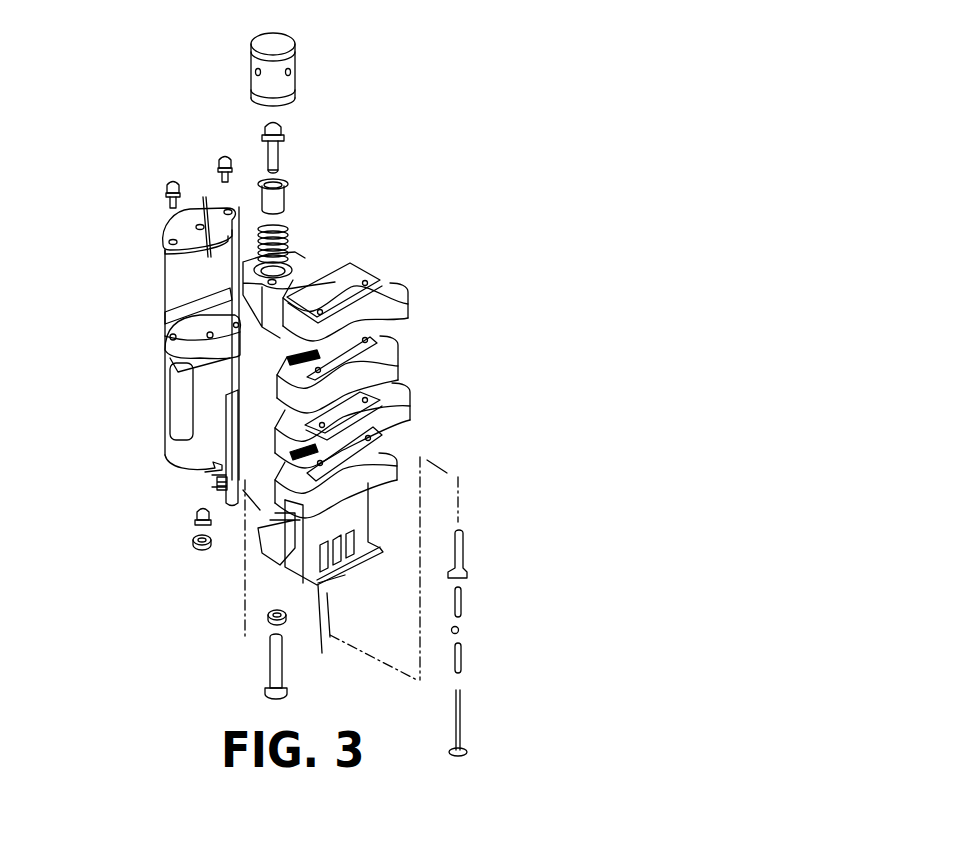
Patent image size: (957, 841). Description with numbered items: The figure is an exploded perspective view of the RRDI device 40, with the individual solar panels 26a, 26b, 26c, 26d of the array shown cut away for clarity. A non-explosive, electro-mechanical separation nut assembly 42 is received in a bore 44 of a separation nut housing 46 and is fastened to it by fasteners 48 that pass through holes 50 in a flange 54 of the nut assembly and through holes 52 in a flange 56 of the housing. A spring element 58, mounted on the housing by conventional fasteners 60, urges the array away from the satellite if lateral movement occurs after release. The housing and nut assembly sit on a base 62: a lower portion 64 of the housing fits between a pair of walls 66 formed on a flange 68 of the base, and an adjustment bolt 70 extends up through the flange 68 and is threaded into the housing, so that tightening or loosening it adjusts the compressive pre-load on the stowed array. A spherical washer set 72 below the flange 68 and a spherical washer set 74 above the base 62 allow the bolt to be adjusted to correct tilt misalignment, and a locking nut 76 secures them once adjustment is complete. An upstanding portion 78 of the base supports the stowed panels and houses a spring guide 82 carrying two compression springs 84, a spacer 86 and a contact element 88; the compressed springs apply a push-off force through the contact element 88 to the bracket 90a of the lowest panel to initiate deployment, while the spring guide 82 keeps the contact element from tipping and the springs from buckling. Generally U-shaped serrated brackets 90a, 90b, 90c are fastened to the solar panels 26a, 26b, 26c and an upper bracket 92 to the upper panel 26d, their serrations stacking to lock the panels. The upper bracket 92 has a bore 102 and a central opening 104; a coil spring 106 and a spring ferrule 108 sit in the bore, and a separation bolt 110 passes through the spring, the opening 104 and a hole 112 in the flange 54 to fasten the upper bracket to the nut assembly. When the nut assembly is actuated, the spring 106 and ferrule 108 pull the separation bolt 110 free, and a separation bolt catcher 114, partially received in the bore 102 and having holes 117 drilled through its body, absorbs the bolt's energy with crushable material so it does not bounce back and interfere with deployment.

The RRDI device 40 is at (500, 65).
The separation nut assembly 42 is at (183, 280).
The bore 44 is at (173, 362).
The separation nut housing 46 is at (177, 447).
The fasteners 48 is at (218, 173).
The holes 50 is at (225, 210).
The holes 52 is at (170, 337).
The flange 54 is at (163, 248).
The flange 56 is at (170, 346).
The spring element 58 is at (212, 466).
The fasteners 60 is at (222, 487).
The base 62 is at (352, 512).
The lower portion 64 is at (222, 474).
The walls 66 is at (290, 512).
The flange 68 is at (268, 572).
The adjustment bolt 70 is at (268, 668).
The spherical washer set 72 is at (262, 627).
The spherical washer set 74 is at (193, 549).
The locking nut 76 is at (193, 525).
The upstanding portion 78 is at (340, 562).
The spring guide 82 is at (460, 725).
The compression springs 84 is at (462, 603).
The spacer 86 is at (460, 631).
The contact element 88 is at (461, 553).
The bracket 90a is at (372, 442).
The bracket 90b is at (370, 395).
The bracket 90c is at (375, 340).
The upper bracket 92 is at (352, 267).
The solar panel 26a is at (398, 463).
The solar panel 26b is at (407, 409).
The solar panel 26c is at (388, 368).
The solar panel 26d is at (400, 303).
The bore 102 is at (310, 262).
The central opening 104 is at (237, 287).
The coil spring 106 is at (292, 239).
The spring ferrule 108 is at (283, 200).
The separation bolt 110 is at (282, 150).
The hole 112 is at (206, 239).
The separation bolt catcher 114 is at (280, 40).
The holes 117 is at (253, 73).